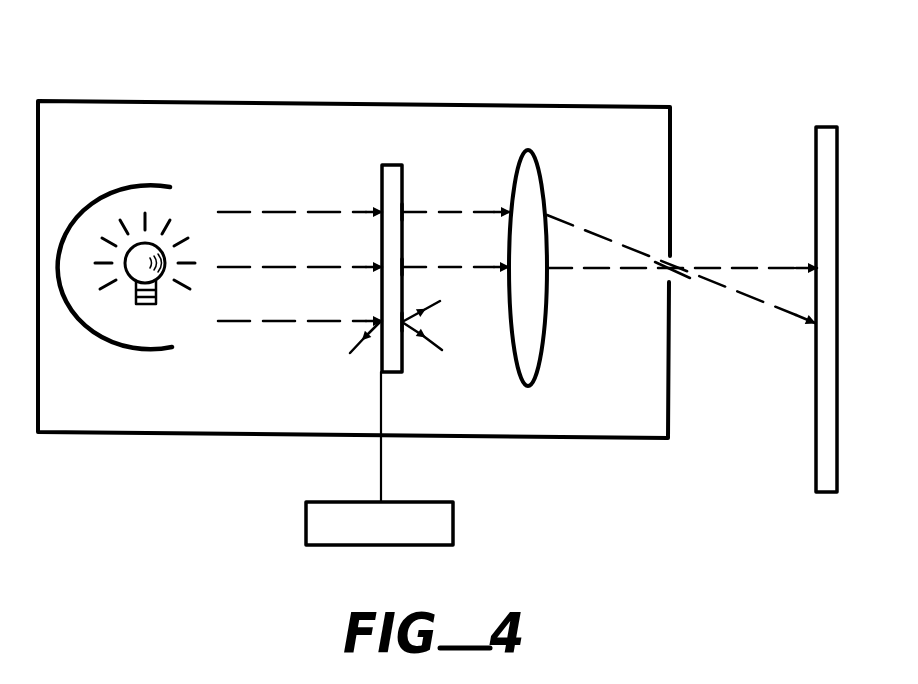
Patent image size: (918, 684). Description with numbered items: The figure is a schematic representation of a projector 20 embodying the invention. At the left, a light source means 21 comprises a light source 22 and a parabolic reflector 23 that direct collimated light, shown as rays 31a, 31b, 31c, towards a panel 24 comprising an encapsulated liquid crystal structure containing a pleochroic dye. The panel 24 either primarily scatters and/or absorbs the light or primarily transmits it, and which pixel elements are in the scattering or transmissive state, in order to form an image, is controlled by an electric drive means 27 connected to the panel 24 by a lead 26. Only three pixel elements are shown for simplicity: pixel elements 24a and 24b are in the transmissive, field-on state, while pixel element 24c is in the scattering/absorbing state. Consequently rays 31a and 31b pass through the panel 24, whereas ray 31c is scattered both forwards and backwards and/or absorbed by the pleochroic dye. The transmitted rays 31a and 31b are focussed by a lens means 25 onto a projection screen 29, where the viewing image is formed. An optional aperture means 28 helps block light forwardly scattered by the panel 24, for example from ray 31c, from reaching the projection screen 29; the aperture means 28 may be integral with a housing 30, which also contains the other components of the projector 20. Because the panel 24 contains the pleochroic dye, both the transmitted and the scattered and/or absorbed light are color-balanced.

The projector 20 is at (354, 282).
The housing 30 is at (177, 99).
The light source means 21 is at (174, 266).
The light source 22 is at (158, 287).
The parabolic reflector 23 is at (108, 337).
The panel 24 is at (399, 218).
The pixel element 24a is at (405, 211).
The pixel element 24b is at (403, 266).
The pixel element 24c is at (403, 326).
The lens means 25 is at (540, 158).
The lead 26 is at (380, 468).
The electric drive means 27 is at (455, 522).
The aperture means 28 is at (673, 262).
The projection screen 29 is at (815, 440).
The ray 31a is at (326, 207).
The ray 31b is at (326, 263).
The ray 31c is at (326, 319).